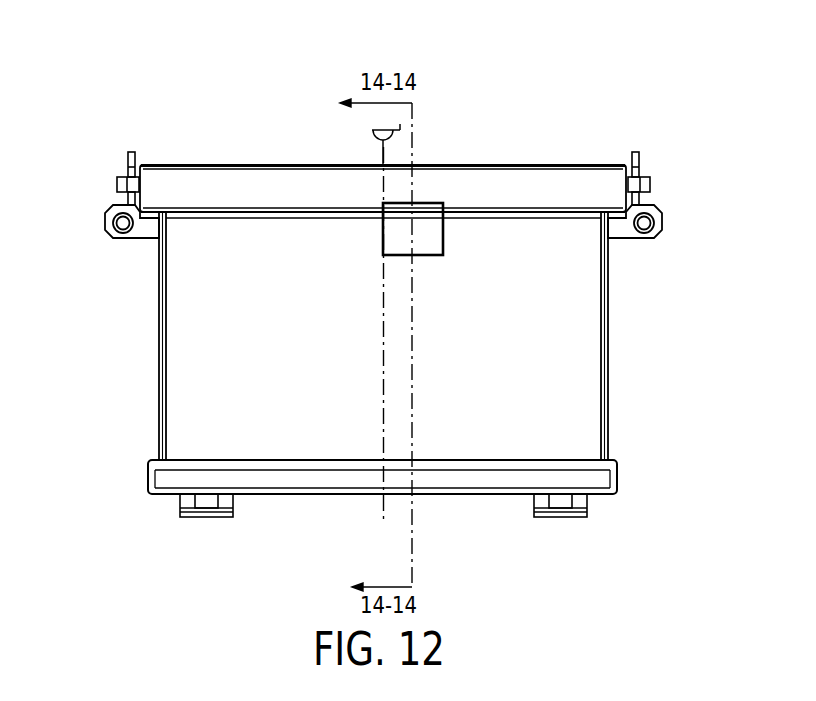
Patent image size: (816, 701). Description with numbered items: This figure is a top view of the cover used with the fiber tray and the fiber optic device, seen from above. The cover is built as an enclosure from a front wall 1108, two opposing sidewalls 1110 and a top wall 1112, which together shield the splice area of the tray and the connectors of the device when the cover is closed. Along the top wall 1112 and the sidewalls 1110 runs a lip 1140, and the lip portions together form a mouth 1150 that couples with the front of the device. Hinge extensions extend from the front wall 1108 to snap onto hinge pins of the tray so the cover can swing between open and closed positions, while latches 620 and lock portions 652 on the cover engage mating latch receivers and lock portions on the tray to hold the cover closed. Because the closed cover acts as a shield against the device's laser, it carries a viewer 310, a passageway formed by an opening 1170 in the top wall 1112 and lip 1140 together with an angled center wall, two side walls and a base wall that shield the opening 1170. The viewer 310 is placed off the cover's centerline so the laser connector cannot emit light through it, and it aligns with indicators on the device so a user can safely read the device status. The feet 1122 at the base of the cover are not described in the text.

The mouth 1150 is at (510, 143).
The lip 1140 is at (213, 175).
The latch 620 is at (128, 175).
The lock portion 652 is at (132, 238).
The top wall 1112 is at (158, 373).
The sidewall 1110 is at (183, 405).
The opening 1170 is at (427, 247).
The viewer 310 is at (432, 233).
The front wall 1108 is at (320, 495).
The foot 1122 is at (207, 515).